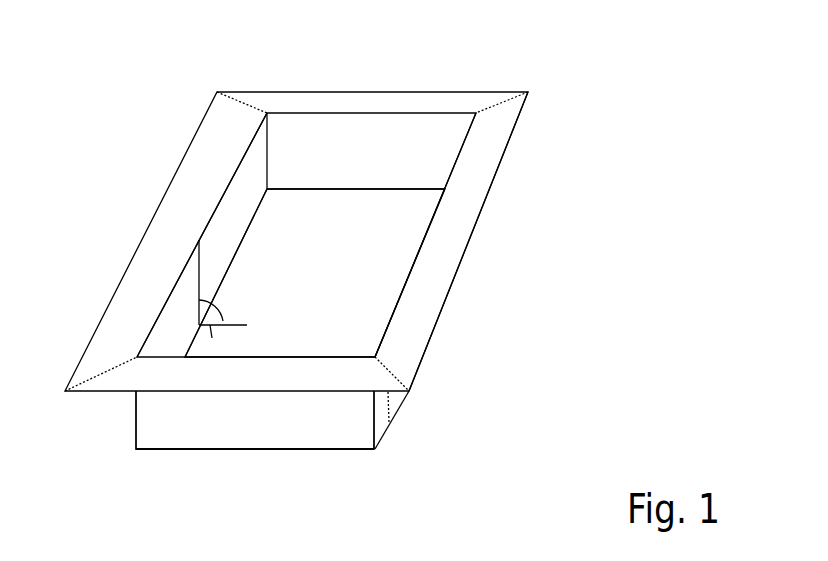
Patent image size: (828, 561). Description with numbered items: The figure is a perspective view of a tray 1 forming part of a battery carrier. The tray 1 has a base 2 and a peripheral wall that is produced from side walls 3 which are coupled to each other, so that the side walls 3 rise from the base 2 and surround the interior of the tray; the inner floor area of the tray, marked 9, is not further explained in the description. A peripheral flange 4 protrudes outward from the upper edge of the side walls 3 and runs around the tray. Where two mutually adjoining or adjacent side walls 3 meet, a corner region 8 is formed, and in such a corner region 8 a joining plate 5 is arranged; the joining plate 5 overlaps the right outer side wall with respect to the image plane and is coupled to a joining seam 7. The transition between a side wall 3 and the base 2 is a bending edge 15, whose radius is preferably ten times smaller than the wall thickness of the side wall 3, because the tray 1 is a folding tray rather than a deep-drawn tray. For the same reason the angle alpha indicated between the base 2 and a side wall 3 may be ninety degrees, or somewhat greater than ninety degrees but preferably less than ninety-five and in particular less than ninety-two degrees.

The tray 1 is at (541, 35).
The base 2 is at (345, 300).
The side walls 3 is at (370, 132).
The peripheral flange 4 is at (460, 203).
The joining plate 5 is at (384, 424).
The joining seam 7 is at (247, 103).
The corner region 8 is at (380, 462).
The floor 9 is at (324, 275).
The bending edge 15 is at (259, 207).